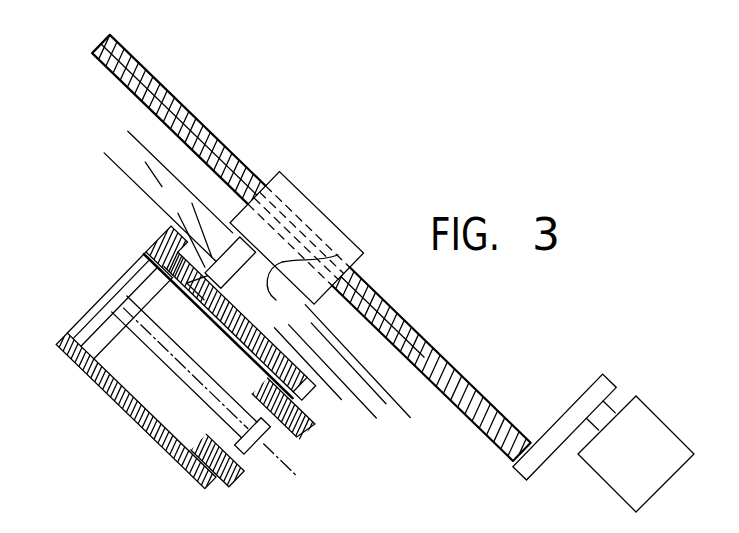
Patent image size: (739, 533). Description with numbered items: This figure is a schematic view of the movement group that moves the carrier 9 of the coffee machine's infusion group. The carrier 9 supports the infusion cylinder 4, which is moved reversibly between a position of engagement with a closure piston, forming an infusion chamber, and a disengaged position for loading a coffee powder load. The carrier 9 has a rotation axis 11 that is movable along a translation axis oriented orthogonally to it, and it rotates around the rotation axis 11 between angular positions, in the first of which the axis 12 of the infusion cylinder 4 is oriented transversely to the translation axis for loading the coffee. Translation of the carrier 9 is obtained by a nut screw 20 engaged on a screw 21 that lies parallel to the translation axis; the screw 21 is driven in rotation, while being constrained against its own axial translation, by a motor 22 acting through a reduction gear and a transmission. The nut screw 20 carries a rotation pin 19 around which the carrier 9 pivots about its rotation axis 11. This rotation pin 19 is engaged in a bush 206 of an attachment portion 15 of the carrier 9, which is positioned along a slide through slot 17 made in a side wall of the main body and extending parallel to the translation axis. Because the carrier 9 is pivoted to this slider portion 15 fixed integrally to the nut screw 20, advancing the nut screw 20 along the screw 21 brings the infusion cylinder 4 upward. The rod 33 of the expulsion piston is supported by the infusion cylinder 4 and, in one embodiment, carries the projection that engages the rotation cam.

The infusion cylinder 4 is at (110, 400).
The carrier 9 is at (75, 308).
The rotation axis 11 is at (218, 260).
The axis of the infusion cylinder 12 is at (108, 296).
The attachment portion 15 is at (358, 383).
The slide through slot 17 is at (225, 236).
The rotation pin 19 is at (288, 215).
The nut screw 20 is at (322, 225).
The screw 21 is at (167, 90).
The motor 22 is at (645, 402).
The rod of the expulsion piston 33 is at (165, 447).
The bush 206 is at (338, 255).